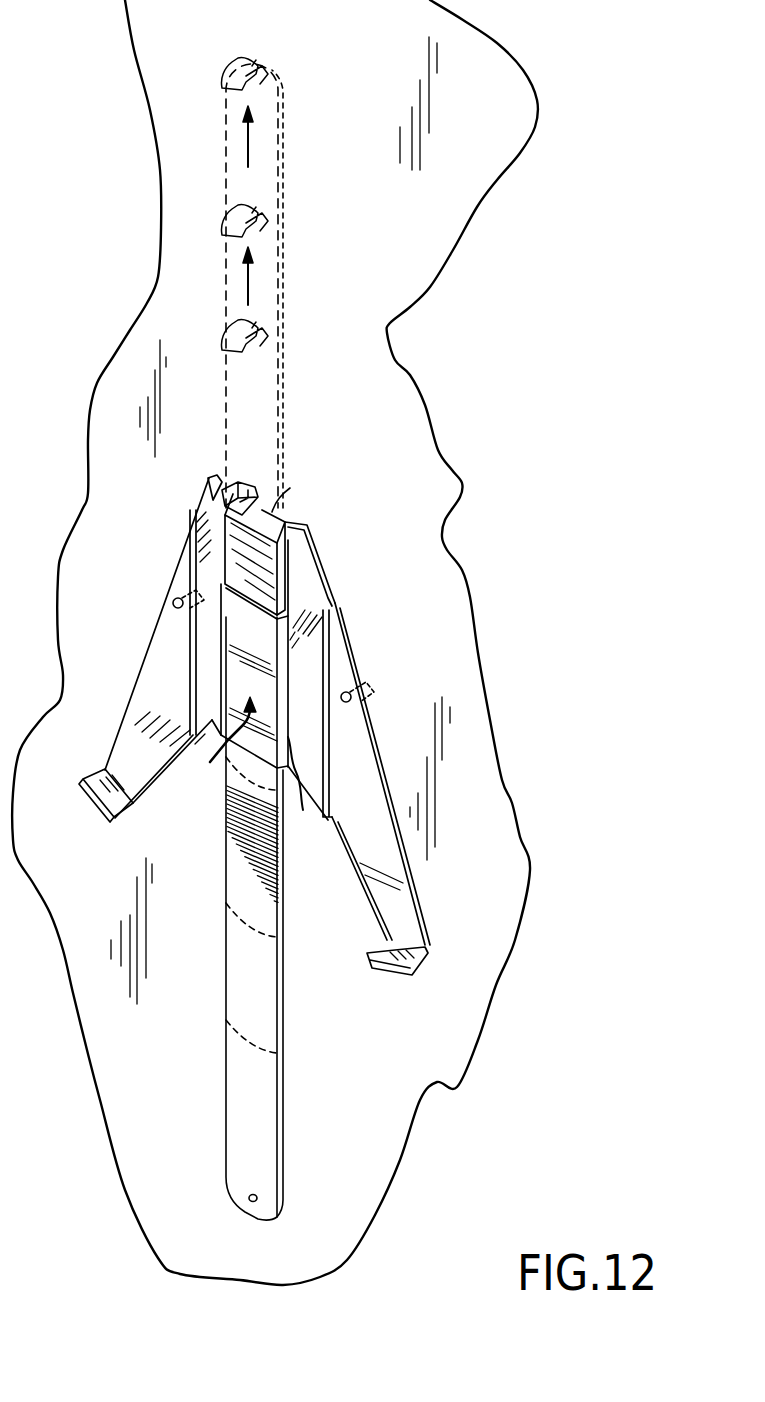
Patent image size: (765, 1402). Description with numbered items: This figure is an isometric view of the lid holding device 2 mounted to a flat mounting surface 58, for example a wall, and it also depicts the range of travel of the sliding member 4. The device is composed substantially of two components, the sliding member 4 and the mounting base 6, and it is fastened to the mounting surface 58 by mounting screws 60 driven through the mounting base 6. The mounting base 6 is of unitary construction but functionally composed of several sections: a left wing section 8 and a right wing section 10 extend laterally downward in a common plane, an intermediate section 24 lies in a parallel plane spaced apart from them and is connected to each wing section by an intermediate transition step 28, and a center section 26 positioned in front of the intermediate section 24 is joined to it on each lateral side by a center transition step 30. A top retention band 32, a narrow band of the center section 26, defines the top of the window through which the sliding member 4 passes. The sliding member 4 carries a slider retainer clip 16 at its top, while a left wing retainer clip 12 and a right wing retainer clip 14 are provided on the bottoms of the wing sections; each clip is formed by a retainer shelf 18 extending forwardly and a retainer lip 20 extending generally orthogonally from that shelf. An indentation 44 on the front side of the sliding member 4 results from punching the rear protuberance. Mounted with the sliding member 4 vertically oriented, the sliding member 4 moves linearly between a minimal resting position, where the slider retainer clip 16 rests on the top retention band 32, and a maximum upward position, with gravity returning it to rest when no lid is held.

The lid holding device 2 is at (332, 527).
The sliding member 4 is at (284, 1110).
The mounting base 6 is at (325, 566).
The left wing section 8 is at (156, 670).
The right wing section 10 is at (398, 902).
The left wing retainer clip 12 is at (122, 813).
The right wing retainer clip 14 is at (418, 975).
The slider retainer clip 16 is at (250, 62).
The retainer shelf 18 is at (244, 486).
The retainer lip 20 is at (212, 488).
The intermediate section 24 is at (182, 548).
The center section 26 is at (219, 745).
The intermediate transition step 28 is at (328, 778).
The center transition step 30 is at (324, 476).
The top retention band 32 is at (286, 490).
The indentation 44 is at (250, 1202).
The mounting surface 58 is at (460, 197).
The mounting screws 60 is at (174, 603).